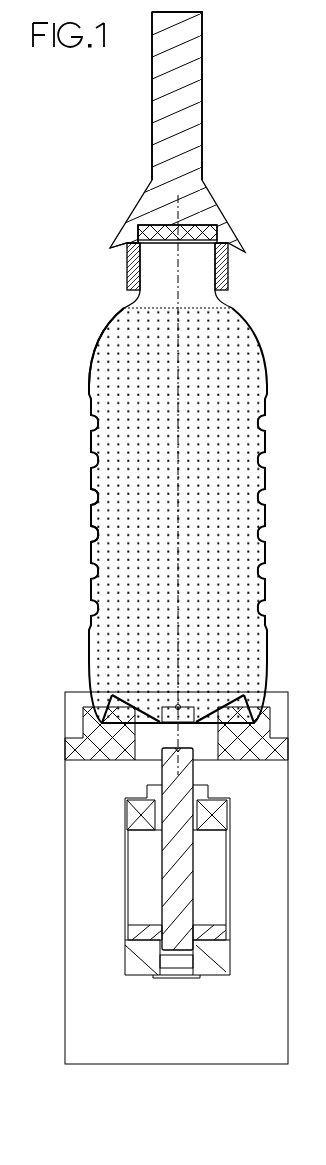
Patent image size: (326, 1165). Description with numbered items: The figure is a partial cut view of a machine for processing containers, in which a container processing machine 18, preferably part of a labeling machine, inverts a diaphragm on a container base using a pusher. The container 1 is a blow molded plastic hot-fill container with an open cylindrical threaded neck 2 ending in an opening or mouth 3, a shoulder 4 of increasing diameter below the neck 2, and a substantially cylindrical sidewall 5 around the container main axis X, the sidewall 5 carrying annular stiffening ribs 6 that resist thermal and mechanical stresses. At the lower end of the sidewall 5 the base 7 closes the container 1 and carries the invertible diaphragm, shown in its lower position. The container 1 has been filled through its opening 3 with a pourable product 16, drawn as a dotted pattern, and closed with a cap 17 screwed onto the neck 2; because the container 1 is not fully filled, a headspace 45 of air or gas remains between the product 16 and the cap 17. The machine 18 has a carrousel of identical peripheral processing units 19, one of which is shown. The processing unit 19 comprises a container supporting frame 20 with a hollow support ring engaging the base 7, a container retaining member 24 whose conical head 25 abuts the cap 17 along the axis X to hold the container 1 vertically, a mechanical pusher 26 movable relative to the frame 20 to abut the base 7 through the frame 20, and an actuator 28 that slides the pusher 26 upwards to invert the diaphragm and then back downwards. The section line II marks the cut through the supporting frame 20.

The container 1 is at (174, 512).
The neck 2 is at (188, 250).
The opening or mouth 3 is at (133, 235).
The shoulder 4 is at (97, 342).
The sidewall 5 is at (92, 487).
The annular stiffening ribs 6 is at (90, 548).
The base 7 is at (130, 720).
The pourable product 16 is at (227, 511).
The cap 17 is at (228, 257).
The container processing machine 18 is at (223, 97).
The processing unit 19 is at (223, 97).
The container supporting frame 20 is at (277, 725).
The container retaining member 24 is at (211, 132).
The conical head 25 is at (223, 232).
The mechanical pusher 26 is at (193, 757).
The actuator 28 is at (230, 830).
The headspace 45 is at (208, 296).
The container main axis X is at (178, 428).
The section line II is at (54, 720).